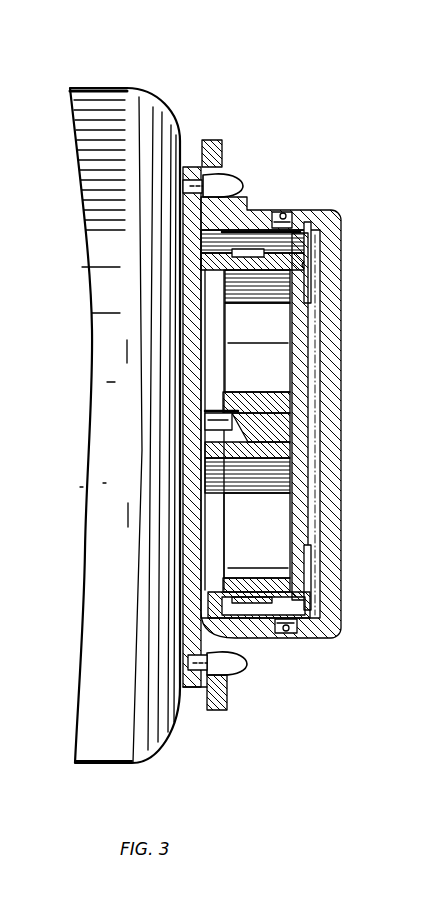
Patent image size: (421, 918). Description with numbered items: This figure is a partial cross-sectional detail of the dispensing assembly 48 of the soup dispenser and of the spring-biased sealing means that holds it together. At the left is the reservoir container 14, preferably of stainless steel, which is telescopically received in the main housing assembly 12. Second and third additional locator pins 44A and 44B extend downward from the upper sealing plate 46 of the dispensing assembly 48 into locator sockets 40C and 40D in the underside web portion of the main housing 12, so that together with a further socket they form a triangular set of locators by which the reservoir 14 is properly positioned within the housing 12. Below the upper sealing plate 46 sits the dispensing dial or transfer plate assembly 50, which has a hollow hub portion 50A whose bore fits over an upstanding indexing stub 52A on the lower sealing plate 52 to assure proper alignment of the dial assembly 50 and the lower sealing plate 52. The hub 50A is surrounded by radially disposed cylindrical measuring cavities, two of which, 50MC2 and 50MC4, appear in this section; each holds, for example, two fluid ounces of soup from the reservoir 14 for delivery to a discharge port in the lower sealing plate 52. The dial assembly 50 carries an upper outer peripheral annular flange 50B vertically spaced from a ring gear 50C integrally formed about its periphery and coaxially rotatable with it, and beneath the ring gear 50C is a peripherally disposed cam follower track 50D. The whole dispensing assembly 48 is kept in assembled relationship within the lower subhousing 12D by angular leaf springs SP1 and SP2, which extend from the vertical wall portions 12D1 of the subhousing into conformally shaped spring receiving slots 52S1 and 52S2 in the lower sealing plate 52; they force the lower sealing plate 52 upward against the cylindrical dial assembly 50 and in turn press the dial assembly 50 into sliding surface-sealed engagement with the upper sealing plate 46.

The reservoir container 14 is at (88, 87).
The main housing assembly 12 is at (223, 713).
The upper sealing plate 46 is at (193, 221).
The locator socket 40D is at (228, 124).
The third additional locator pin 44B is at (240, 186).
The lower subhousing 12D is at (330, 420).
The vertical wall portions 12D1 is at (323, 228).
The angular leaf spring SP2 is at (313, 190).
The angular leaf spring SP1 is at (283, 623).
The ring gear 50C is at (222, 248).
The upper outer peripheral annular flange 50B is at (247, 250).
The spring receiving slot 52S2 is at (300, 283).
The lower sealing plate 52 is at (300, 528).
The spring receiving slot 52S1 is at (293, 570).
The measuring cavity 50MC2 is at (256, 341).
The dispensing assembly 48 is at (213, 366).
The indexing stub 52A is at (238, 427).
The hollow hub portion 50A is at (225, 457).
The measuring cavity 50MC4 is at (247, 518).
The dispensing dial or transfer plate assembly 50 is at (242, 580).
The cam follower track 50D is at (285, 597).
The second additional locator pin 44A is at (238, 672).
The locator socket 40C is at (217, 637).